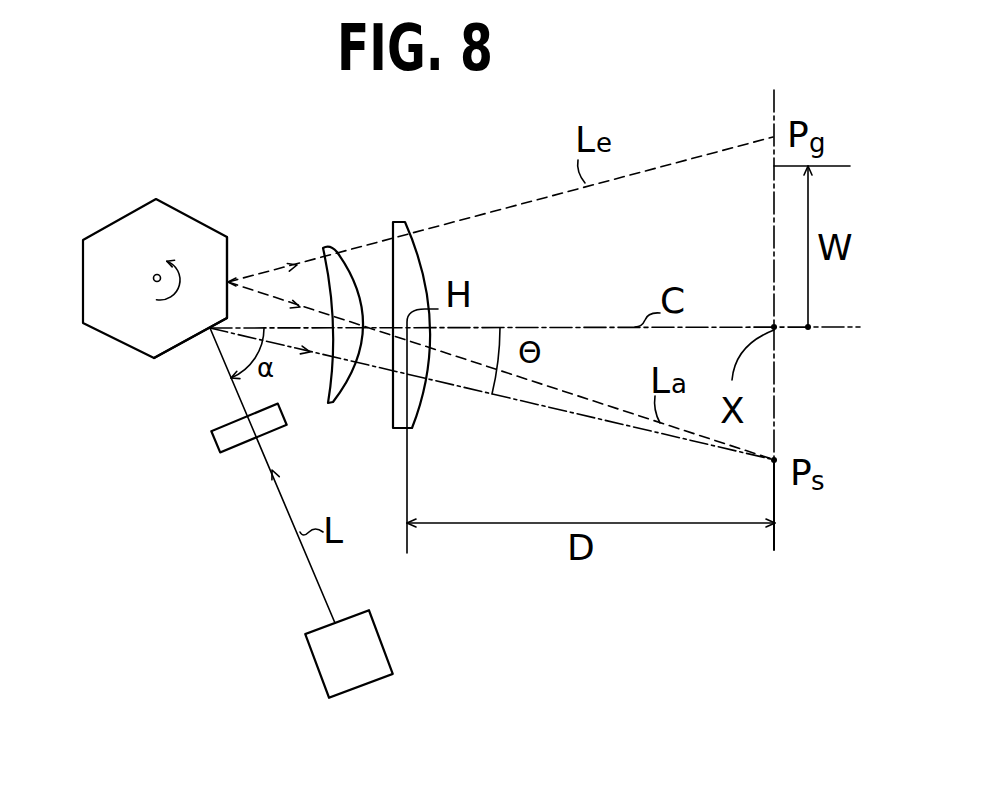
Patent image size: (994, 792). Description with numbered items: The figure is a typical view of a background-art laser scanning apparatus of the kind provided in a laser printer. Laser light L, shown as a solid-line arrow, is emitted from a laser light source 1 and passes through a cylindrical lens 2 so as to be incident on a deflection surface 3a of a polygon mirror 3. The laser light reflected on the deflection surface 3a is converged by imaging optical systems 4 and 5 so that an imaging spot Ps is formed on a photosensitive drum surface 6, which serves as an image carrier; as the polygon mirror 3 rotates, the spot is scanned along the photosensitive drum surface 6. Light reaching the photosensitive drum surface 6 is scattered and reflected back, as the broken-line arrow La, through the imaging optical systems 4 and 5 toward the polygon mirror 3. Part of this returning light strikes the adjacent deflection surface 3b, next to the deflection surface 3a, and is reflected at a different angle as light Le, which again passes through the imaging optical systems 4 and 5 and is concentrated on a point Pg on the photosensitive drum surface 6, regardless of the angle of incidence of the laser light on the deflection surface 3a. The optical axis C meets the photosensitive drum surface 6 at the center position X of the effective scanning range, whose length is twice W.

The laser light source 1 is at (323, 667).
The cylindrical lens 2 is at (217, 437).
The polygon mirror 3 is at (98, 323).
The deflection surface 3a is at (190, 343).
The adjacent deflection surface 3b is at (228, 268).
The imaging optical system 4 is at (322, 248).
The imaging optical system 5 is at (396, 222).
The photosensitive drum surface 6 is at (777, 537).